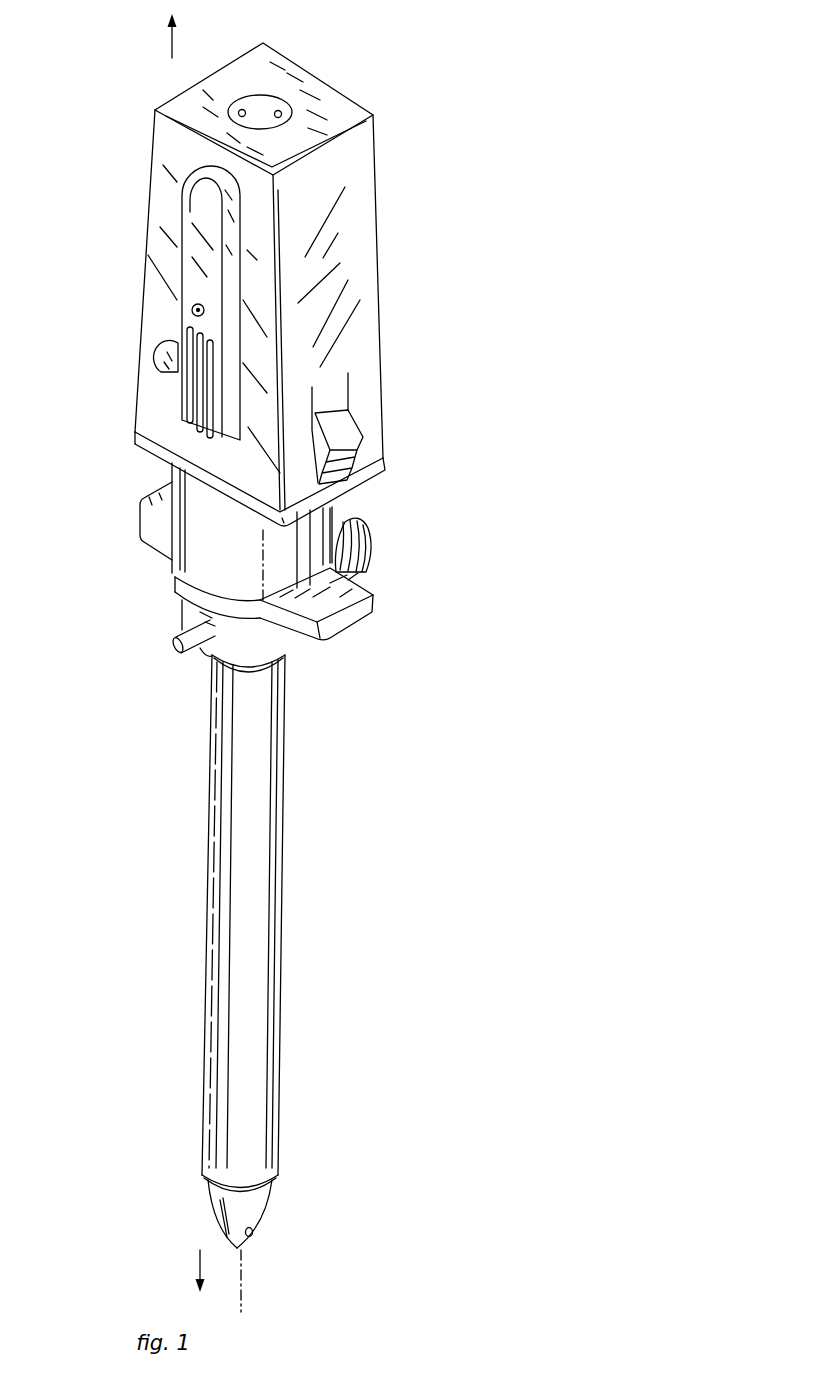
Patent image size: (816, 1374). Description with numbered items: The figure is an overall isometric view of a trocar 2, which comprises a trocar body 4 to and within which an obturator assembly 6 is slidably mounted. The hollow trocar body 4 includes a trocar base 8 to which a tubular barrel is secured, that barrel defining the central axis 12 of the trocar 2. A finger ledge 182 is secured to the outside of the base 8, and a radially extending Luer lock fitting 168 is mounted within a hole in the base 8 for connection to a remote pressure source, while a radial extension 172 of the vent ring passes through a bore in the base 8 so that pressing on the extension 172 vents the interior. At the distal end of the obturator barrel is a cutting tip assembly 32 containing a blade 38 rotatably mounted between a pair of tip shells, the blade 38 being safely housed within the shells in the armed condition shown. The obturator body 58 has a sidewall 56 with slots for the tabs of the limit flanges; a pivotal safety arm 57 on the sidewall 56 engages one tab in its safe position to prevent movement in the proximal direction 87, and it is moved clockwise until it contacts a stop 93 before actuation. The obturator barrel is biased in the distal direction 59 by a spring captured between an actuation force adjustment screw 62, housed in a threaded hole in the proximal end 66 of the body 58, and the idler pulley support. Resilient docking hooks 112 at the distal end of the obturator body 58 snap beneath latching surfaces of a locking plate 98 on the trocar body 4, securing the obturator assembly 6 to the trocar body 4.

The trocar 2 is at (463, 138).
The trocar body 4 is at (405, 580).
The obturator assembly 6 is at (395, 158).
The trocar base 8 is at (347, 508).
The central axis 12 is at (242, 1265).
The cutting tip assembly 32 is at (320, 1172).
The blade 38 is at (227, 1245).
The sidewall 56 is at (160, 312).
The safety arm 57 is at (183, 260).
The obturator body 58 is at (380, 320).
The distal direction 59 is at (200, 1252).
The actuation force adjustment screw 62 is at (262, 110).
The proximal end 66 is at (348, 118).
The proximal direction 87 is at (172, 43).
The stop 93 is at (162, 356).
The locking plate 98 is at (365, 477).
The docking hooks 112 is at (342, 430).
The Luer lock fitting 168 is at (365, 540).
The radial extension 172 is at (178, 640).
The finger ledge 182 is at (360, 612).